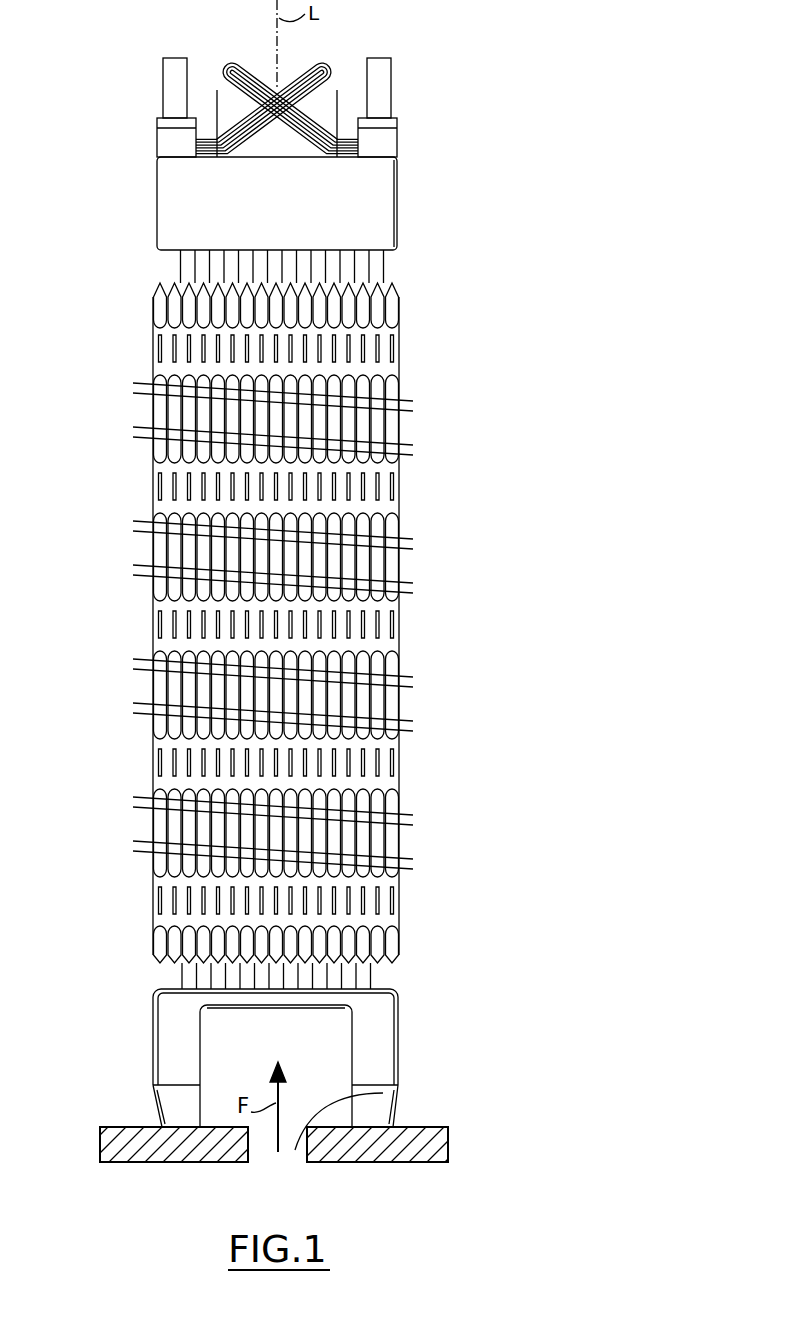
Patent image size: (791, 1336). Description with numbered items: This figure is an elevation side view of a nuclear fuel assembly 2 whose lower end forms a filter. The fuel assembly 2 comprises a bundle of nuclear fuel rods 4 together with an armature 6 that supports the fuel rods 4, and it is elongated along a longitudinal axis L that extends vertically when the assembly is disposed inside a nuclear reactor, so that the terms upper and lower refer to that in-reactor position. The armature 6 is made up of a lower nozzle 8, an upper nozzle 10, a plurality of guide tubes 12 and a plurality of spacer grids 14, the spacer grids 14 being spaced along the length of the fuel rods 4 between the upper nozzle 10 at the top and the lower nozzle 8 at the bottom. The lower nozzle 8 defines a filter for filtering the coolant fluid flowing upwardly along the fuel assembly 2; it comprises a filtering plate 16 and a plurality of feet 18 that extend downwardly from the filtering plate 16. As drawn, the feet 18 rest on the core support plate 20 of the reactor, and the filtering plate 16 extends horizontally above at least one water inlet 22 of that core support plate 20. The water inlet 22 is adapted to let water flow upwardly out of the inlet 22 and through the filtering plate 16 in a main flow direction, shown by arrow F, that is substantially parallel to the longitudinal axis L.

The nuclear fuel assembly 2 is at (476, 120).
The nuclear fuel rods 4 is at (380, 323).
The armature 6 is at (116, 249).
The lower nozzle 8 is at (415, 1015).
The upper nozzle 10 is at (402, 207).
The guide tubes 12 is at (362, 280).
The spacer grids 14 is at (382, 357).
The filtering plate 16 is at (175, 998).
The feet 18 is at (170, 1052).
The core support plate 20 is at (405, 1155).
The water inlet 22 is at (383, 1092).